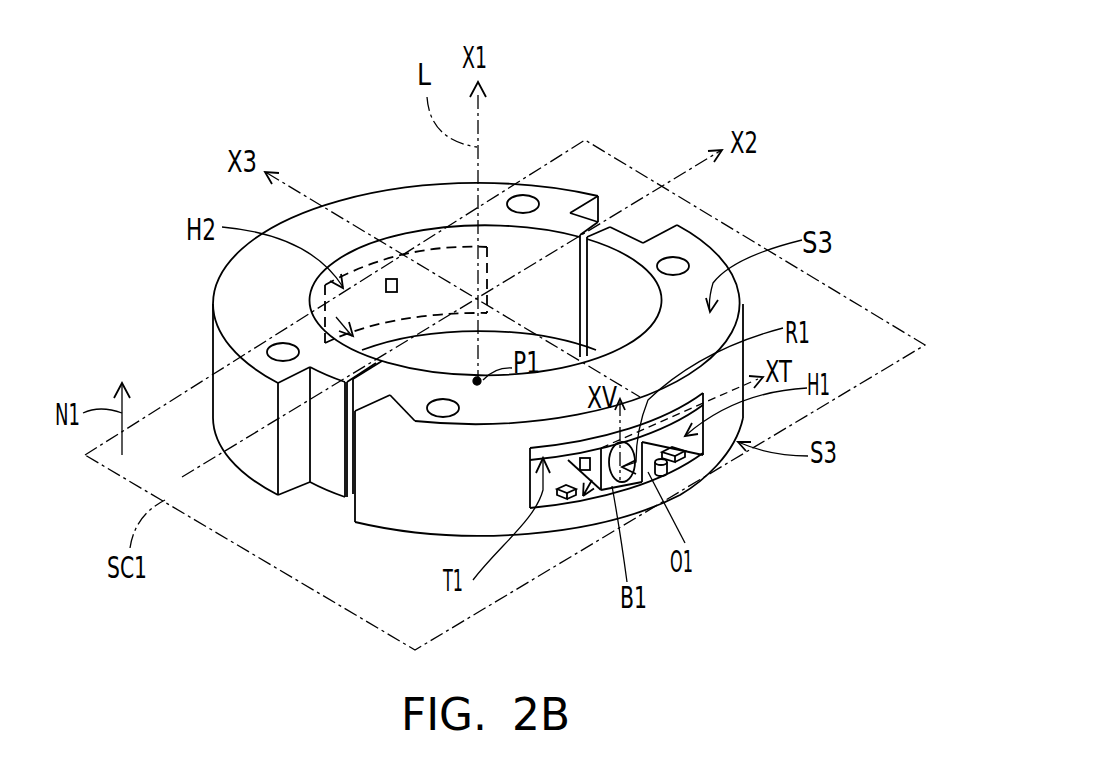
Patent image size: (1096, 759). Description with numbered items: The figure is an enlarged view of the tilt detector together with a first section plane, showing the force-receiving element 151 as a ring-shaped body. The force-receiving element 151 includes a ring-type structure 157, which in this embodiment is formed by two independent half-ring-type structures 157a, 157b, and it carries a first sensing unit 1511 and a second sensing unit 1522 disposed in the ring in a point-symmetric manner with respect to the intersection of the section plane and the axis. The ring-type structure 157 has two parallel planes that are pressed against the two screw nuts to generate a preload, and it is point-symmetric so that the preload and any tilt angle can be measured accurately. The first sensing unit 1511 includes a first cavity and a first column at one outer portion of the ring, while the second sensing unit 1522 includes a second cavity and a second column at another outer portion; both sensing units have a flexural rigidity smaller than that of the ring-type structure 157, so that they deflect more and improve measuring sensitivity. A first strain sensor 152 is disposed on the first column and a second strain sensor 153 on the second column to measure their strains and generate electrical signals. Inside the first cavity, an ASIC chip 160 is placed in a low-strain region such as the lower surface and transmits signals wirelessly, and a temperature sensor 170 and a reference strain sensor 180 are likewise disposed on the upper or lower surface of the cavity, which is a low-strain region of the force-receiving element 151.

The force-receiving element 151 is at (558, 207).
The first strain sensor 152 is at (377, 507).
The second strain sensor 153 is at (391, 279).
The ring-type structure 157 is at (285, 534).
The half-ring-type structure 157a is at (267, 470).
The half-ring-type structure 157b is at (352, 478).
The second sensing unit 1522 is at (300, 286).
The first sensing unit 1511 is at (633, 492).
The ASIC chip 160 is at (672, 460).
The temperature sensor 170 is at (660, 478).
The reference strain sensor 180 is at (558, 497).